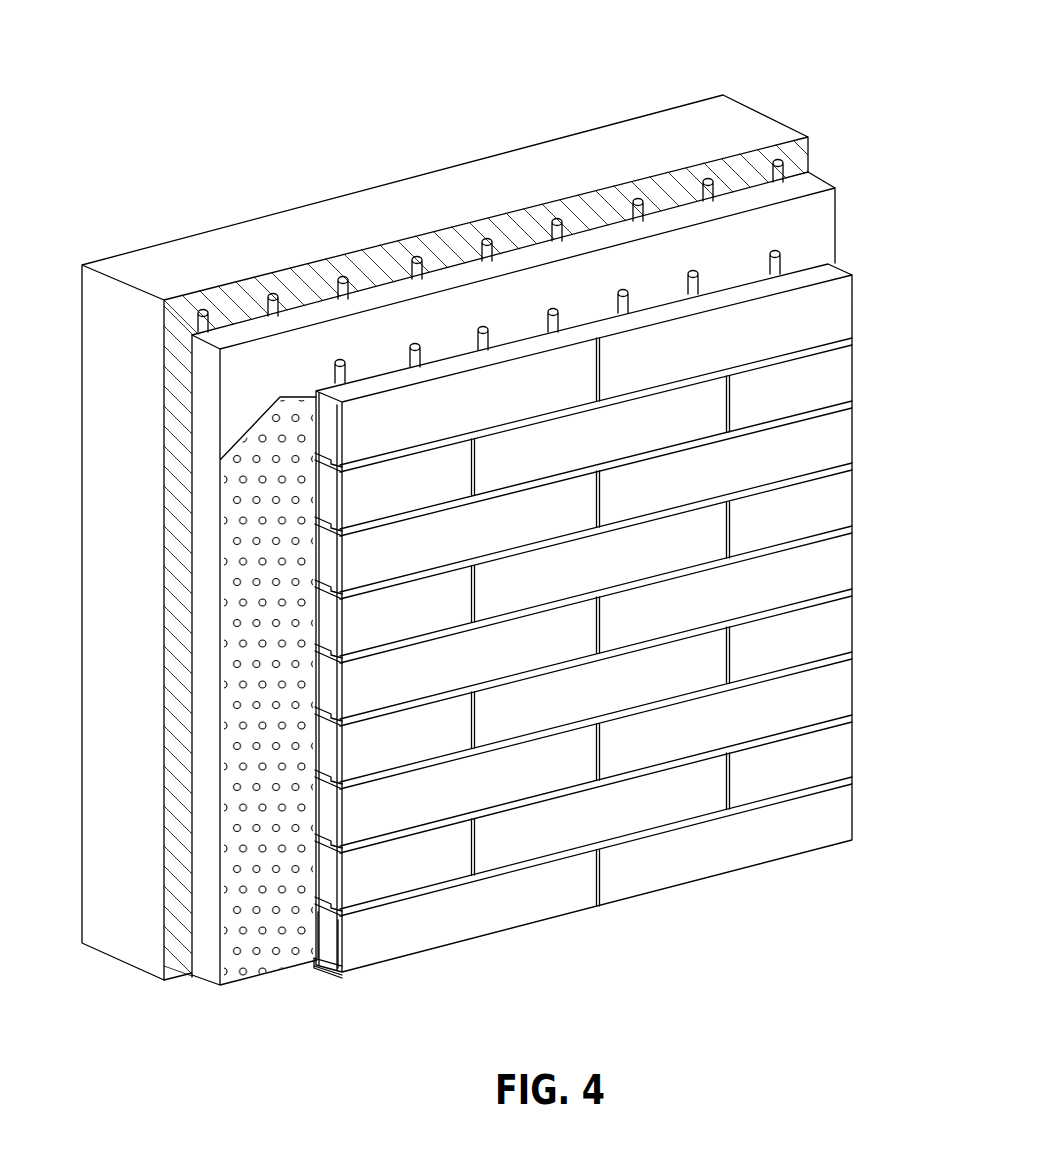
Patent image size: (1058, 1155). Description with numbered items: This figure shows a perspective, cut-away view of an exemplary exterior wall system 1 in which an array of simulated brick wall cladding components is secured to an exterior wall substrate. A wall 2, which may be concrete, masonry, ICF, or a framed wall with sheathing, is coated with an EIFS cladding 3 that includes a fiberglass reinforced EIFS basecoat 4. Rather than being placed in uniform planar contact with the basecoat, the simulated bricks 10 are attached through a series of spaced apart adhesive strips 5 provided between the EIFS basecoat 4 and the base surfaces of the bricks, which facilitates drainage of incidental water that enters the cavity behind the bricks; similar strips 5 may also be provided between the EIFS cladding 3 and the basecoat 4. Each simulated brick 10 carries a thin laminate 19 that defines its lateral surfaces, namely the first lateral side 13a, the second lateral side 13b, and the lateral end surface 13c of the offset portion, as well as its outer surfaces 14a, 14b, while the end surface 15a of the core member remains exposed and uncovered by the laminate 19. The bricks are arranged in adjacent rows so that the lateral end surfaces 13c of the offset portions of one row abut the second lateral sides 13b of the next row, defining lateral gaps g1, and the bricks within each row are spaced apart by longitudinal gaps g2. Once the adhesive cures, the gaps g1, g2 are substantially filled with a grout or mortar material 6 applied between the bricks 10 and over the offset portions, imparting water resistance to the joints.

The wall system 1 is at (313, 62).
The wall 2 is at (433, 207).
The EIFS cladding 3 is at (183, 976).
The EIFS basecoat 4 is at (287, 956).
The adhesive strips 5 is at (778, 162).
The grout or mortar material 6 is at (603, 872).
The simulated brick 10 is at (473, 908).
The first lateral side 13a is at (337, 773).
The second lateral side 13b is at (325, 905).
The lateral end surface 13c is at (322, 642).
The outer surface 14a is at (840, 373).
The outer surface 14b is at (338, 517).
The end surface 15a is at (323, 930).
The laminate 19 is at (337, 953).
The lateral gap g1 is at (333, 463).
The longitudinal gap g2 is at (592, 338).